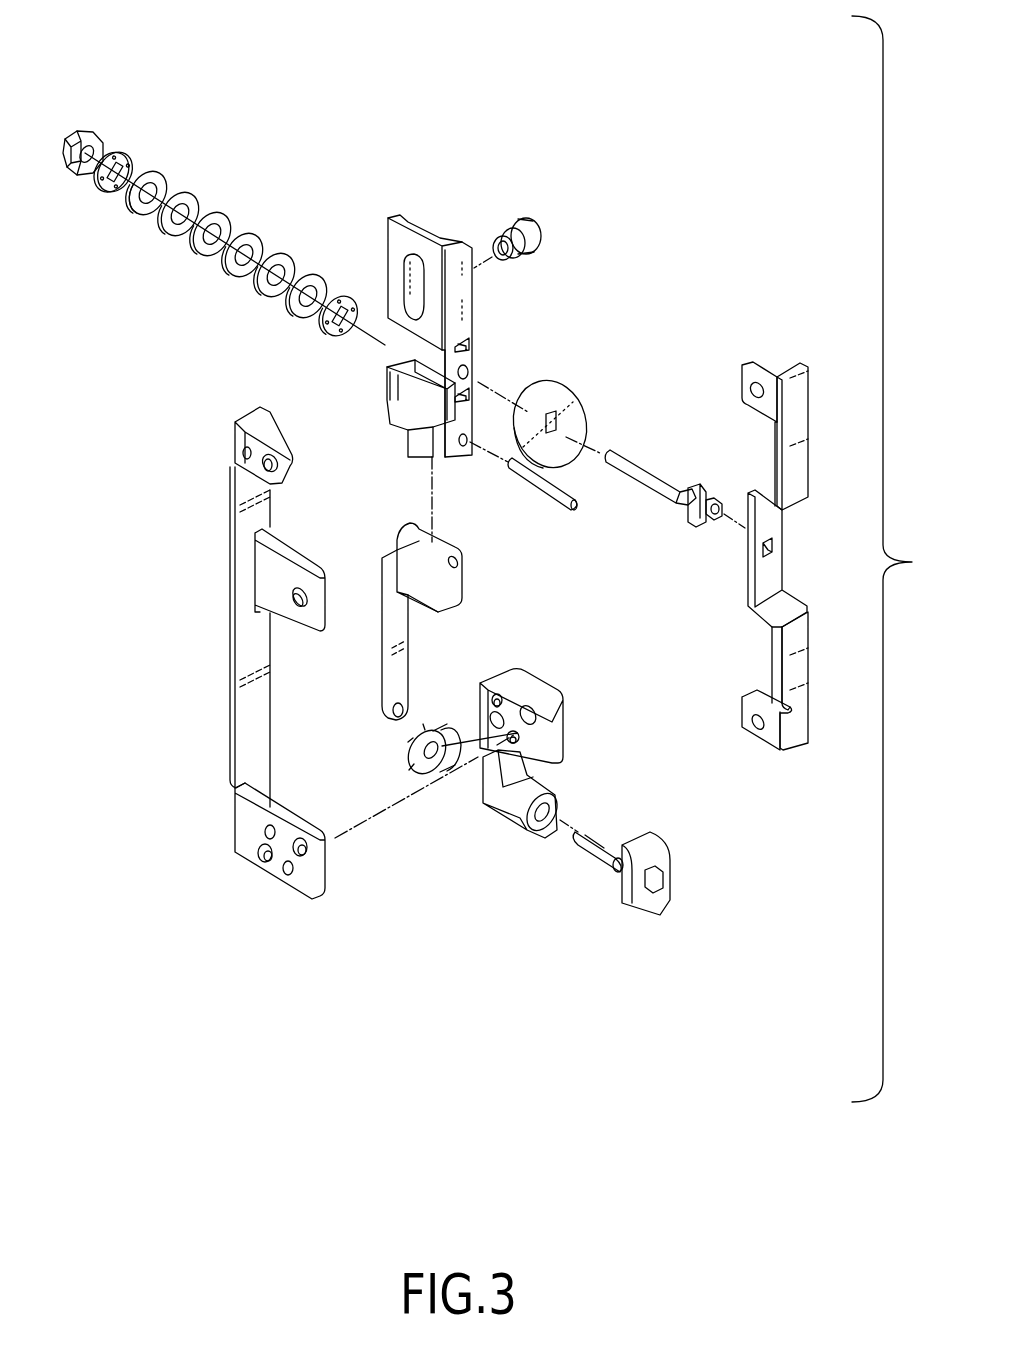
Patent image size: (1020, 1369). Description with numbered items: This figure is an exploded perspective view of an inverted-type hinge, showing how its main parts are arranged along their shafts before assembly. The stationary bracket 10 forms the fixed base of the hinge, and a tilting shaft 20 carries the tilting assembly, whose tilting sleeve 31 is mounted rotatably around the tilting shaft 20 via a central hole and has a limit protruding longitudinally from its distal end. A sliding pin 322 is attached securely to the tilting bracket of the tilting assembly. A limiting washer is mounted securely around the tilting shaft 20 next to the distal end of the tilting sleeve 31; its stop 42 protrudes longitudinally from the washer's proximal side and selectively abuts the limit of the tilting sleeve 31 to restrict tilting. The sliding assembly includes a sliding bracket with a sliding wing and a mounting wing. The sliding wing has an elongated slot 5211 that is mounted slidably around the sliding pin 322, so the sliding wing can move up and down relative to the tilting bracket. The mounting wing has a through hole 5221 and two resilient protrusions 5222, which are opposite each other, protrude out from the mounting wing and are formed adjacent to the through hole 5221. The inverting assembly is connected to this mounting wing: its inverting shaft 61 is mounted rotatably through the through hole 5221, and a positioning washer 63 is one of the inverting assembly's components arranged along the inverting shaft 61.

The stationary bracket 10 is at (640, 915).
The tilting shaft 20 is at (600, 842).
The tilting sleeve 31 is at (521, 822).
The stop 42 is at (452, 740).
The inverting shaft 61 is at (652, 478).
The positioning washer 63 is at (579, 388).
The sliding pin 322 is at (535, 228).
The elongated slot 5211 is at (417, 268).
The through hole 5221 is at (452, 370).
The resilient protrusions 5222 is at (468, 347).